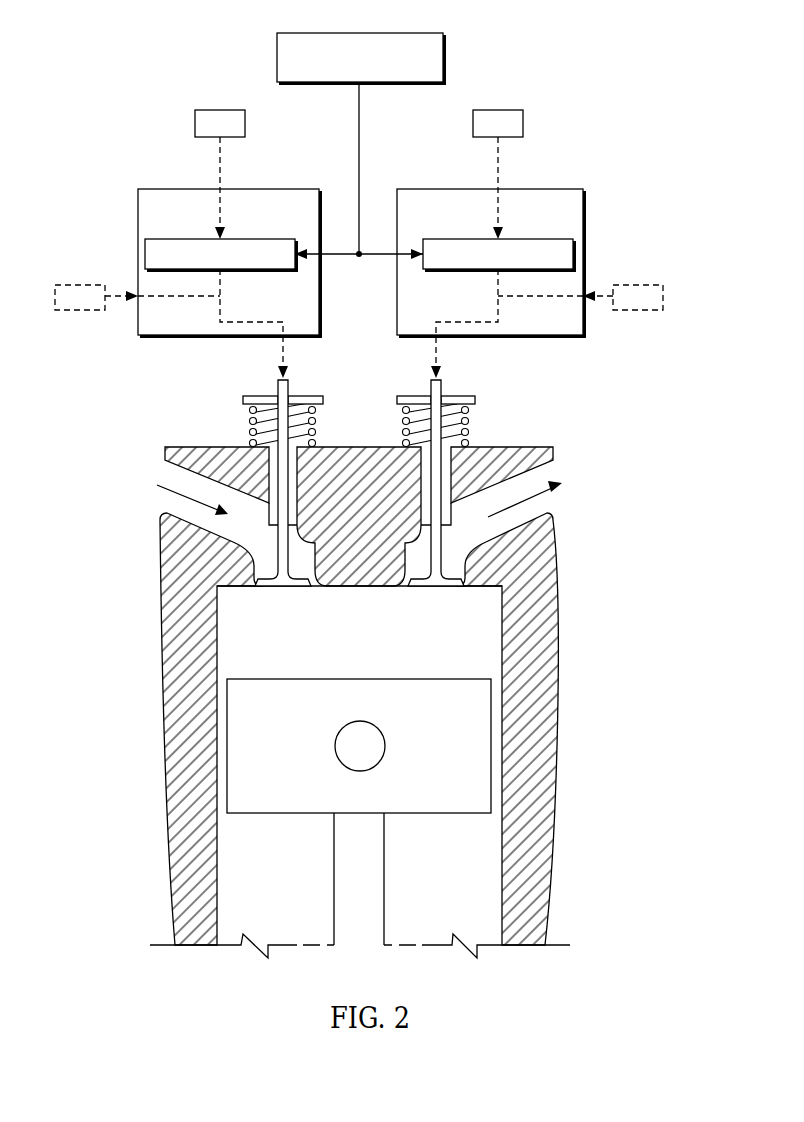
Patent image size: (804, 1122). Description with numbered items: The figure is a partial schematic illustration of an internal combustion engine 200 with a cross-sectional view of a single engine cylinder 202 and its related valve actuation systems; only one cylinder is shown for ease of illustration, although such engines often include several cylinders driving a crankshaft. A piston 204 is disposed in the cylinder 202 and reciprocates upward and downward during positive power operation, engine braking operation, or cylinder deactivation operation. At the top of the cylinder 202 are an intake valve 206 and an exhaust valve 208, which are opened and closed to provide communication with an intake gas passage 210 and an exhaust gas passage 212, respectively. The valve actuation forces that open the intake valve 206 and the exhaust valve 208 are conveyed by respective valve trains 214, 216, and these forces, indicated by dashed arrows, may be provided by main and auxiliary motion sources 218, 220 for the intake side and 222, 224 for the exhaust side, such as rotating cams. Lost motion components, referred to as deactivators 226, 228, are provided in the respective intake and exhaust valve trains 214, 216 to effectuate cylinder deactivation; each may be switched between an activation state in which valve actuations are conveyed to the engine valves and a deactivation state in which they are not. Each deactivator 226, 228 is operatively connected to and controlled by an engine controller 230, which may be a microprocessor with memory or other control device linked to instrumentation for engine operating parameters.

The internal combustion engine 200 is at (121, 36).
The engine cylinder 202 is at (282, 918).
The piston 204 is at (360, 679).
The intake valve 206 is at (283, 588).
The exhaust valve 208 is at (438, 588).
The intake gas passage 210 is at (166, 492).
The exhaust gas passage 212 is at (546, 492).
The intake valve train 214 is at (183, 189).
The exhaust valve train 216 is at (461, 189).
The main motion source 218 is at (220, 110).
The auxiliary motion source 220 is at (81, 310).
The main motion source 222 is at (498, 110).
The auxiliary motion source 224 is at (641, 310).
The deactivator 226 is at (183, 239).
The deactivator 228 is at (461, 239).
The engine controller 230 is at (277, 58).